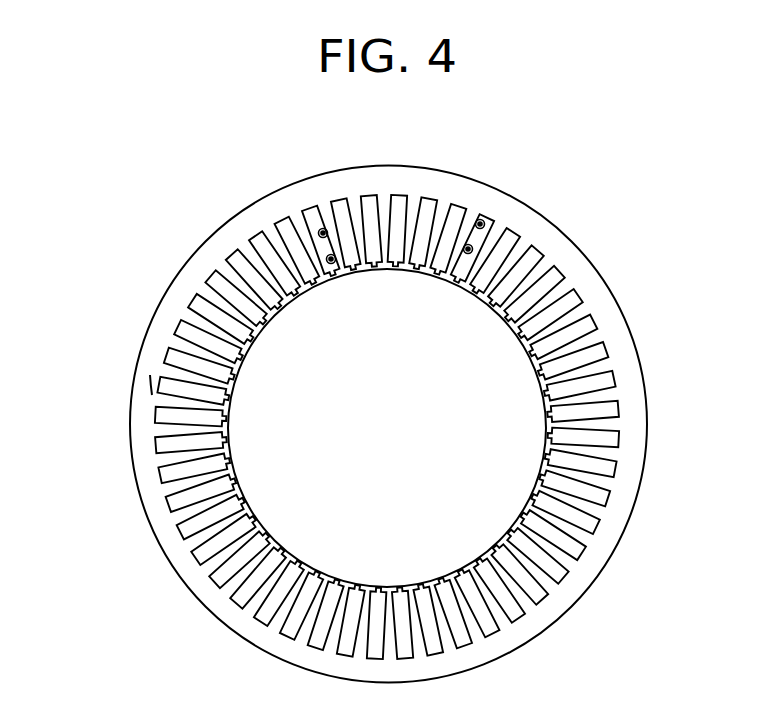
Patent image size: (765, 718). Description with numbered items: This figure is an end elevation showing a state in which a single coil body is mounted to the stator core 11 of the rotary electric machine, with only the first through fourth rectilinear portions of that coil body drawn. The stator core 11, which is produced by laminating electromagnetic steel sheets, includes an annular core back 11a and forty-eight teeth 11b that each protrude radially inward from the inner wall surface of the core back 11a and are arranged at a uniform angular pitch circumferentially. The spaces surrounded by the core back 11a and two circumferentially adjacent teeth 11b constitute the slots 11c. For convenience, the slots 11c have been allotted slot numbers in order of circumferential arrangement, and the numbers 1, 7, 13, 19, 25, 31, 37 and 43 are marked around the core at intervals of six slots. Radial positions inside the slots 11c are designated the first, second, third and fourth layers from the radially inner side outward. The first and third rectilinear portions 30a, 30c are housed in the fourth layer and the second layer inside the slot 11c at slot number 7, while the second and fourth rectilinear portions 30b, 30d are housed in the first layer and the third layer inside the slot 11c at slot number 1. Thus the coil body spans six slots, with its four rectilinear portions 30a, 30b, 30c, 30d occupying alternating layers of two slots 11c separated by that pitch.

The stator core 11 is at (143, 173).
The core back 11a is at (150, 382).
The teeth 11b is at (174, 462).
The slots 11c is at (170, 418).
The slot number 1 is at (321, 232).
The slot number 7 is at (473, 239).
The slot number 13 is at (583, 359).
The slot number 19 is at (575, 513).
The slot number 25 is at (456, 620).
The slot number 31 is at (298, 613).
The slot number 37 is at (192, 496).
The slot number 43 is at (200, 341).
The first rectilinear portion 30a is at (480, 219).
The second rectilinear portion 30b is at (331, 264).
The third rectilinear portion 30c is at (468, 254).
The fourth rectilinear portion 30d is at (323, 228).